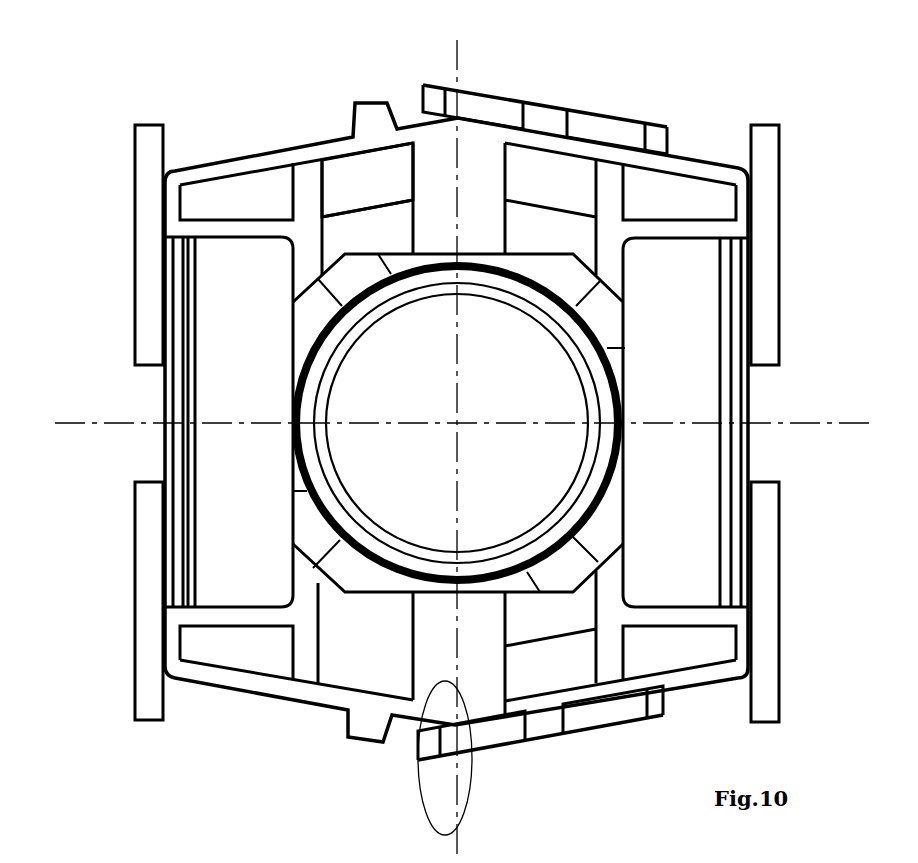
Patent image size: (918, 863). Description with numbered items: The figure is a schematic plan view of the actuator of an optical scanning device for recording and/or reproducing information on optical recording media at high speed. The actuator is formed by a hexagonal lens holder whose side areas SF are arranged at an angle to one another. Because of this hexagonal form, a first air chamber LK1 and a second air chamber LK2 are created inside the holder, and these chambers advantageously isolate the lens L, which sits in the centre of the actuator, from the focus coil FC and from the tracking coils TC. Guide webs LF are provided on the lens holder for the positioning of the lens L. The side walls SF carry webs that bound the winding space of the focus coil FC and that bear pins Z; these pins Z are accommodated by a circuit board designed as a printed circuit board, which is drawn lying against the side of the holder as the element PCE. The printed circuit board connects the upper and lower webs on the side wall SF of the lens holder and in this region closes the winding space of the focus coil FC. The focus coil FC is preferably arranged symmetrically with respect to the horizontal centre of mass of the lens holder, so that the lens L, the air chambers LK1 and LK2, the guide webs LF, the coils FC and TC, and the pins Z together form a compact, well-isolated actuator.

The tracking coils TC is at (150, 122).
The second air chamber LK2 is at (238, 357).
The side areas SF is at (263, 152).
The first air chamber LK1 is at (361, 224).
The plate connecting element PCE is at (477, 87).
The focus coil FC is at (752, 410).
The guide webs LF is at (303, 530).
The lens L is at (392, 478).
The pins Z is at (357, 752).